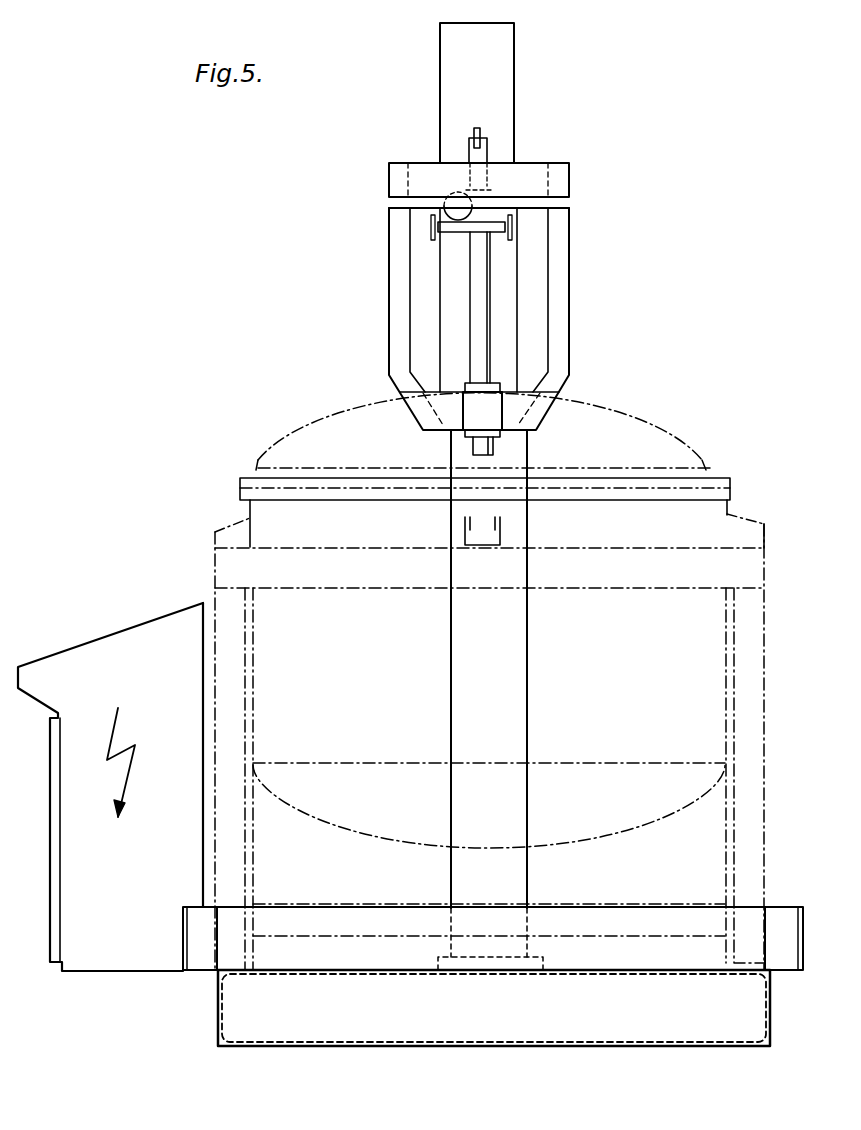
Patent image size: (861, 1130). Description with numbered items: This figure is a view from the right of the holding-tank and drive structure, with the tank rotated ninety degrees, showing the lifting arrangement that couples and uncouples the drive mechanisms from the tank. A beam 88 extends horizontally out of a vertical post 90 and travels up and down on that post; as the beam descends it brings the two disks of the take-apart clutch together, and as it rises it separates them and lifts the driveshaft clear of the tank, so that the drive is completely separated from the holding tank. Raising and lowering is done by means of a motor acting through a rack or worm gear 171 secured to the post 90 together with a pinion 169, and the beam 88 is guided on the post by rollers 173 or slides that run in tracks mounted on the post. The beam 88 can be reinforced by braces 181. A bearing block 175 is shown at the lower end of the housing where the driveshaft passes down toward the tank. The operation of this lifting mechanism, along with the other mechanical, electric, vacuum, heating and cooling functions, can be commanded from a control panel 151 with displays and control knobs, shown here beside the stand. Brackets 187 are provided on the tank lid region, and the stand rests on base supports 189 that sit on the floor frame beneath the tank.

The post 90 is at (514, 50).
The roller 173 is at (481, 136).
The rack or worm gear 171 is at (447, 196).
The beam 88 is at (569, 182).
The pinion 169 is at (440, 227).
The brace 181 is at (565, 276).
The bearing block 175 is at (487, 407).
The bracket 187 is at (503, 525).
The base support 189 is at (202, 957).
The control panel 151 is at (117, 958).